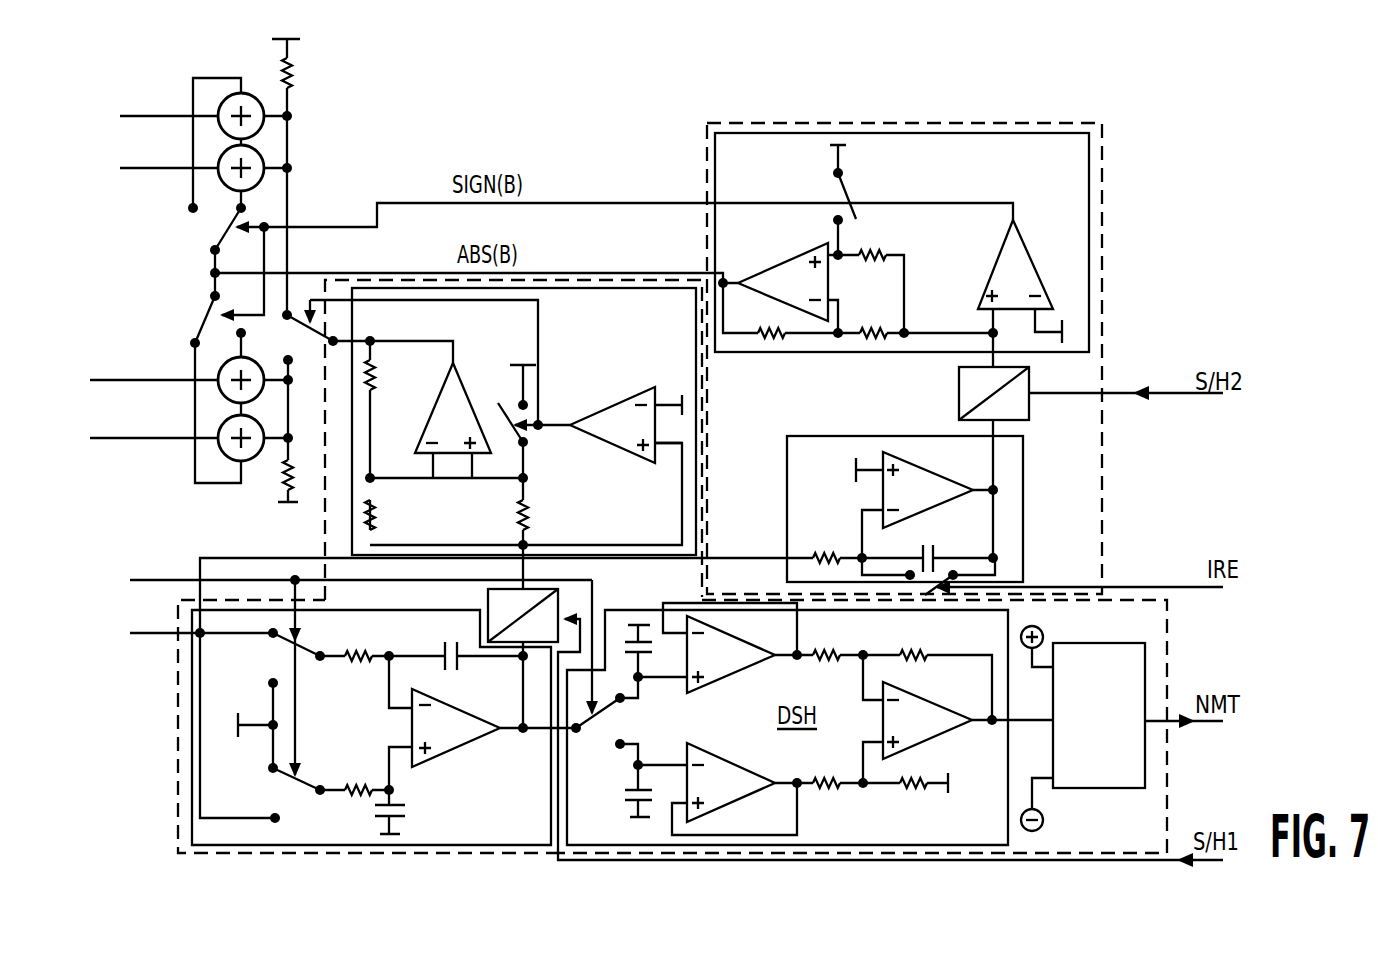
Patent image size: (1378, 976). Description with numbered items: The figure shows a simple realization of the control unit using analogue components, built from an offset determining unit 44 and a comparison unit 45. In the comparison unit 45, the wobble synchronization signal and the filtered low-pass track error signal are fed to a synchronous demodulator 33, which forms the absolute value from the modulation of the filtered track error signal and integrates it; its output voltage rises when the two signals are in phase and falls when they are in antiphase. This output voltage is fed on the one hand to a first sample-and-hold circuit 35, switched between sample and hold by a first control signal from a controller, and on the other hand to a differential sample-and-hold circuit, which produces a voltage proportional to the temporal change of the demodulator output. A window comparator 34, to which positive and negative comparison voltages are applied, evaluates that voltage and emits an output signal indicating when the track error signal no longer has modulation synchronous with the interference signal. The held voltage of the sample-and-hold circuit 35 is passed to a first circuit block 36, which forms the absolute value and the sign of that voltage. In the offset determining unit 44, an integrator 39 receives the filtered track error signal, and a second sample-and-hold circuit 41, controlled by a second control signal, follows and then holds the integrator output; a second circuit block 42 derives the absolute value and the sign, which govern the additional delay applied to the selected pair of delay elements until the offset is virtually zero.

The synchronous demodulator 33 is at (207, 835).
The window comparator 34 is at (1110, 732).
The first sample-and-hold circuit 35 is at (488, 600).
The first circuit block 36 is at (656, 324).
The integrator 39 is at (825, 478).
The second sample-and-hold circuit 41 is at (959, 393).
The second circuit block 42 is at (1040, 172).
The offset determining unit 44 is at (1104, 243).
The comparison unit 45 is at (1169, 636).